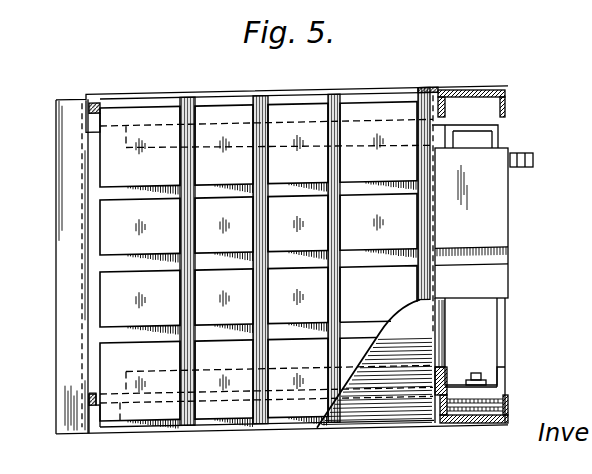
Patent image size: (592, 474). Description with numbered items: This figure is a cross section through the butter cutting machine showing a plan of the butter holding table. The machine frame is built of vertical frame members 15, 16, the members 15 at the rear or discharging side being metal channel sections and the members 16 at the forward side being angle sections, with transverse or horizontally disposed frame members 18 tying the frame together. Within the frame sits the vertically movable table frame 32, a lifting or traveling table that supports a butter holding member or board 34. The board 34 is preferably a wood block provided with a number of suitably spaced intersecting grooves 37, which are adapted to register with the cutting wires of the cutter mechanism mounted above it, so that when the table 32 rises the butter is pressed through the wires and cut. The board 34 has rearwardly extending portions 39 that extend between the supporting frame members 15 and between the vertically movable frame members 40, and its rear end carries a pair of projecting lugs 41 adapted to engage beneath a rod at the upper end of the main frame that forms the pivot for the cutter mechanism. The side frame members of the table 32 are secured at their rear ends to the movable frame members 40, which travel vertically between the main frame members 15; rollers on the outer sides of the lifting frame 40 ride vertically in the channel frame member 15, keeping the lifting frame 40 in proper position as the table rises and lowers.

The vertical frame member 15 is at (507, 92).
The vertical frame member 16 is at (92, 102).
The transverse frame member 18 is at (57, 158).
The vertically movable table frame 32 is at (298, 120).
The butter holding board 34 is at (164, 113).
The intersecting grooves 37 is at (262, 112).
The rearwardly extending portion 39 is at (503, 213).
The vertically movable frame member 40 is at (498, 129).
The projecting lug 41 is at (533, 157).